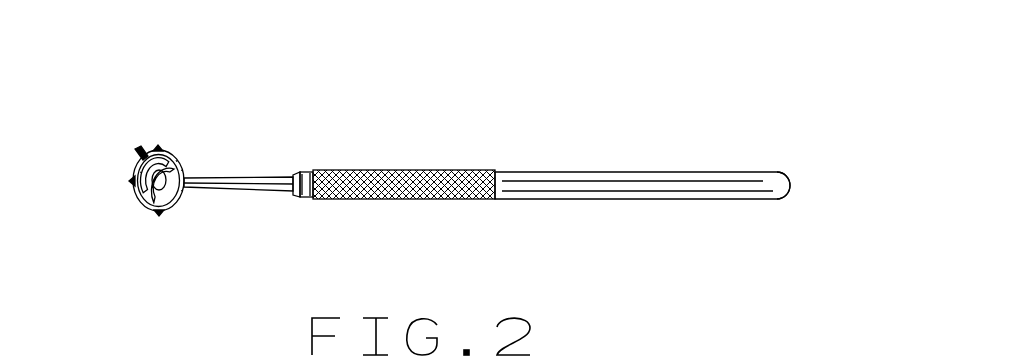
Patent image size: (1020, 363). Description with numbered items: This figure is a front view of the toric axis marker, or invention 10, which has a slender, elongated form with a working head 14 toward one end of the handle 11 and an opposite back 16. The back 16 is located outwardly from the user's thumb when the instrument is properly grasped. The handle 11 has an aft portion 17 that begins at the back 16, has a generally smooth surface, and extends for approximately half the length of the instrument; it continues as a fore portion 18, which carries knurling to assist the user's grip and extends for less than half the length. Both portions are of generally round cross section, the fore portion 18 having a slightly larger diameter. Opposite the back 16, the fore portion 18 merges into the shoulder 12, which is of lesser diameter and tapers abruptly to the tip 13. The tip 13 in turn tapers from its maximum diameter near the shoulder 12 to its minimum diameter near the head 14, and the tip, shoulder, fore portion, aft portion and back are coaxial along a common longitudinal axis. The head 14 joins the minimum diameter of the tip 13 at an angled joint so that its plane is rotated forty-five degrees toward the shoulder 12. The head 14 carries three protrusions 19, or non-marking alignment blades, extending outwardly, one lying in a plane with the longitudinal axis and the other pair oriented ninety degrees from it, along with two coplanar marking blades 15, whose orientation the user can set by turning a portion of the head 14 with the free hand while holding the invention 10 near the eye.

The toric axis marker 10 is at (408, 150).
The handle 11 is at (490, 171).
The shoulder 12 is at (304, 172).
The tip 13 is at (235, 177).
The working head 14 is at (173, 152).
The coplanar marking blades 15 is at (140, 150).
The back 16 is at (798, 190).
The aft portion 17 is at (585, 200).
The fore portion 18 is at (391, 199).
The protrusions 19 is at (157, 146).